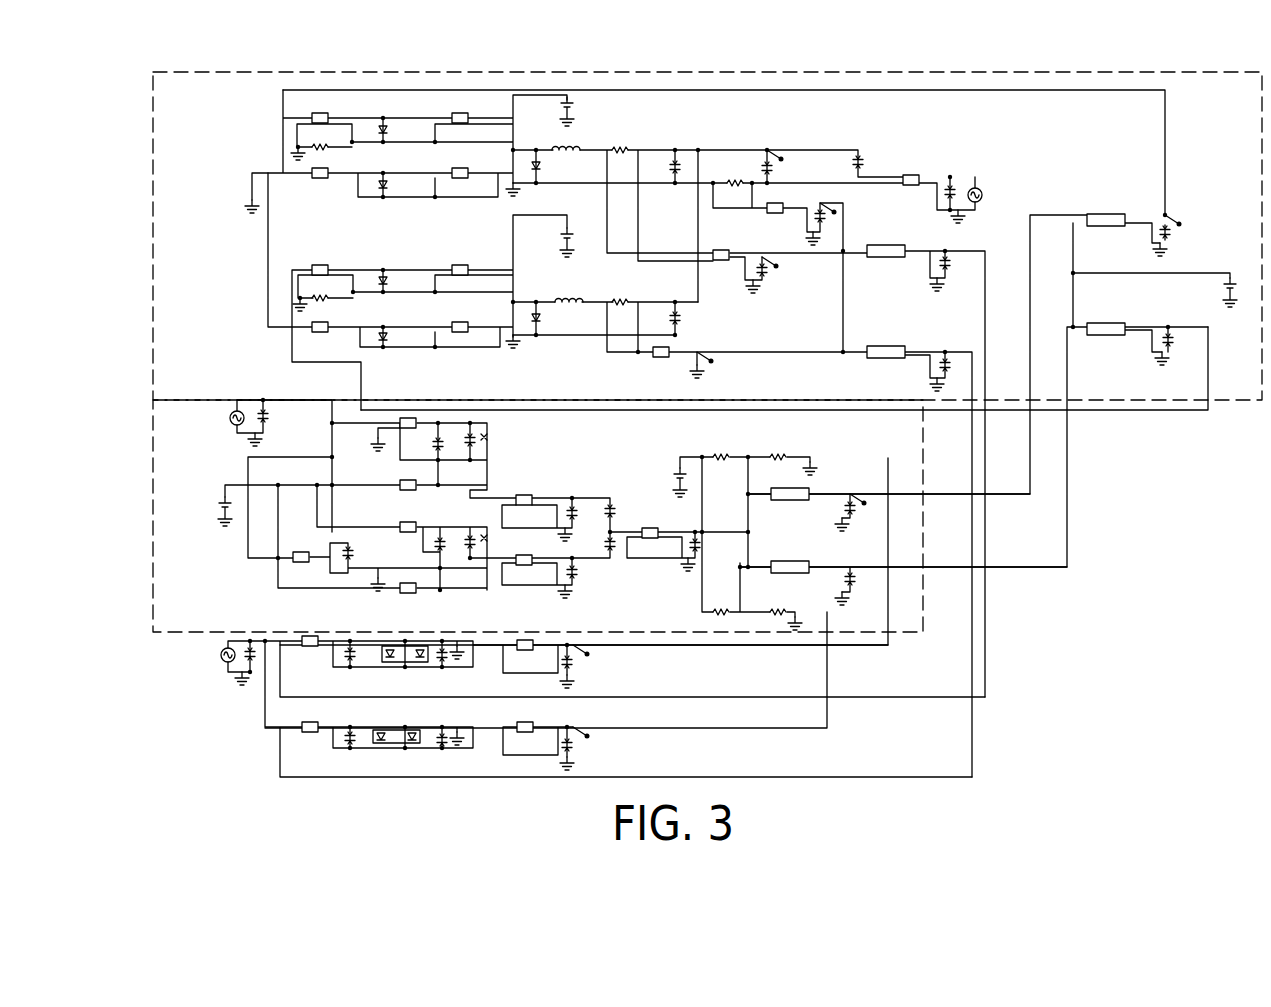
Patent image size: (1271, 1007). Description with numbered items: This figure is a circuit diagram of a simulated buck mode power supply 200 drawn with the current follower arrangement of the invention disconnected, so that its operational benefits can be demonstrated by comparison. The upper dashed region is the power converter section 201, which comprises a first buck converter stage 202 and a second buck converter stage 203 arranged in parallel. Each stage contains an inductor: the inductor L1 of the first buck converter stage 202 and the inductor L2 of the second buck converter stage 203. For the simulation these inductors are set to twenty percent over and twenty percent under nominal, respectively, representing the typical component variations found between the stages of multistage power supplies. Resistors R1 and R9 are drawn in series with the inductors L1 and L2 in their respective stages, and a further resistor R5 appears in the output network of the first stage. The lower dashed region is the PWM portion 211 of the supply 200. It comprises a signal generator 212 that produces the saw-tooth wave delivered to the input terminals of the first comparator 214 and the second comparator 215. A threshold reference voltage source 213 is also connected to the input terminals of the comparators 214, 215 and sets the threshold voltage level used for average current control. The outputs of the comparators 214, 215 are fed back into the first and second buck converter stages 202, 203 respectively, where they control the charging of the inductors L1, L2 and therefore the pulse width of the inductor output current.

The simulated buck mode power supply 200 is at (1062, 592).
The power converter section 201 is at (152, 238).
The first buck converter stage 202 is at (248, 132).
The second buck converter stage 203 is at (242, 292).
The PWM portion 211 is at (150, 524).
The signal generator 212 is at (222, 430).
The threshold reference voltage source 213 is at (678, 458).
The first comparator 214 is at (808, 490).
The second comparator 215 is at (789, 563).
The inductor L1 is at (566, 149).
The resistor R1 is at (623, 149).
The resistor R5 is at (742, 181).
The inductor L2 is at (557, 301).
The resistor R9 is at (623, 301).